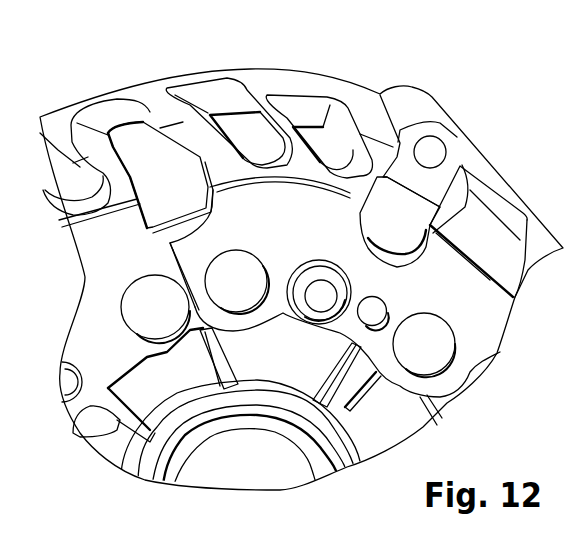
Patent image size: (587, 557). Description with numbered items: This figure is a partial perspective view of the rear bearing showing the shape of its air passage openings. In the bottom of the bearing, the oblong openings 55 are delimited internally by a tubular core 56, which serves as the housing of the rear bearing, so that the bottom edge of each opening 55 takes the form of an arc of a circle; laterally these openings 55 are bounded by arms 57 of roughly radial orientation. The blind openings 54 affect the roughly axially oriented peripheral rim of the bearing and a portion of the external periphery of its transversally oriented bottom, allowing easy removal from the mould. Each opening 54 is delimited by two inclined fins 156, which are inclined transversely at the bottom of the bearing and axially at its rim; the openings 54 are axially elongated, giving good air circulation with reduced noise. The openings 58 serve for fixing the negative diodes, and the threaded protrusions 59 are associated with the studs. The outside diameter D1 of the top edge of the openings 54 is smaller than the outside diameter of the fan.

The inclined fins 156 is at (172, 120).
The air passage openings 54 is at (330, 148).
The threaded protrusions 59 is at (147, 313).
The openings for fixing the negative diodes 58 is at (430, 373).
The arms 57 is at (120, 413).
The air passage openings 55 is at (165, 387).
The tubular core 56 is at (232, 422).
The outside diameter of the opening D1 is at (286, 326).